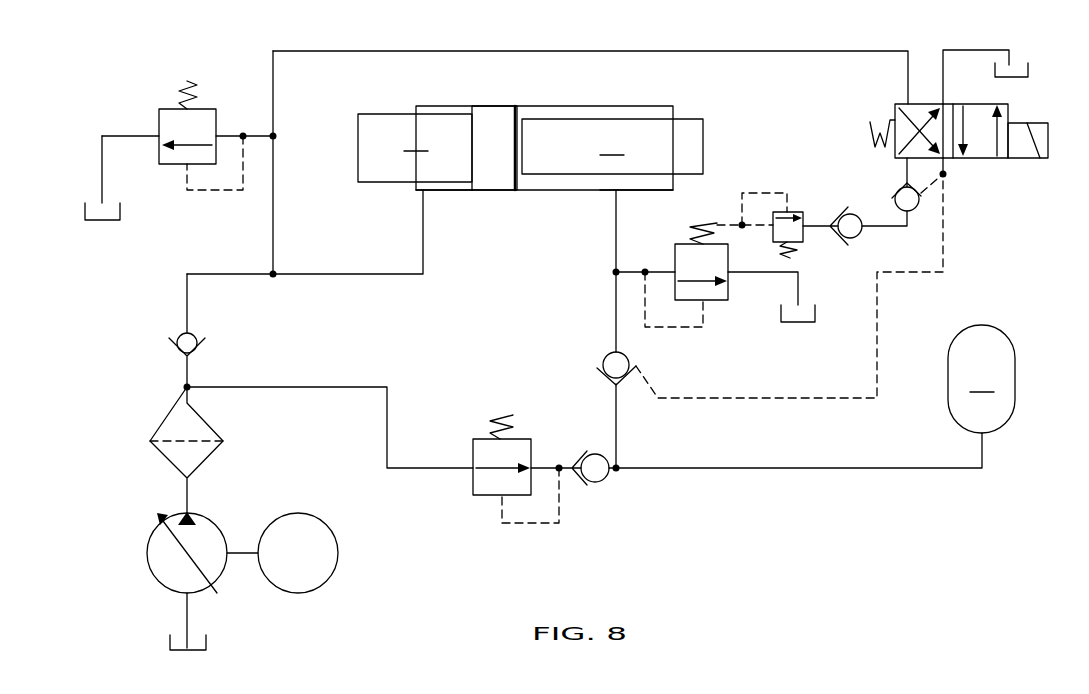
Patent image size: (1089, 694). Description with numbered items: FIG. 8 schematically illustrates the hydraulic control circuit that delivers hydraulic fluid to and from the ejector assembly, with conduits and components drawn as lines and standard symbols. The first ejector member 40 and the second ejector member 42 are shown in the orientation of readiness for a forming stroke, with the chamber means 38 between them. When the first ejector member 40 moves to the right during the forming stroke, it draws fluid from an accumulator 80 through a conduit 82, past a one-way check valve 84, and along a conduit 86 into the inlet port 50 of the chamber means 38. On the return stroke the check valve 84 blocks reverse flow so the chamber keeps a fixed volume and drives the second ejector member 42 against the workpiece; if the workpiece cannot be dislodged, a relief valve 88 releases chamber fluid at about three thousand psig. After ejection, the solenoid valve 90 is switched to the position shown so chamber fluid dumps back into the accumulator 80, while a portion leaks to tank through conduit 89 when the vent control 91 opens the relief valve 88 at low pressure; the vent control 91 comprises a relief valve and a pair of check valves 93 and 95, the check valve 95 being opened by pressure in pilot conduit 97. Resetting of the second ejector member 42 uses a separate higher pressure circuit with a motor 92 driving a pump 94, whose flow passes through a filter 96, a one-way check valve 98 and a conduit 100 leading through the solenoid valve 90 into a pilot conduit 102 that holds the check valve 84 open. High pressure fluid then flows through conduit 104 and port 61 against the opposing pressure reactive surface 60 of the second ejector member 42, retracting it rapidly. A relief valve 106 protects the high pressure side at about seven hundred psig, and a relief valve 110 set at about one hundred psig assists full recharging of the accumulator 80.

The chamber means 38 is at (606, 112).
The first ejector member 40 is at (612, 146).
The second ejector member 42 is at (415, 148).
The port 50 is at (618, 192).
The opposing pressure reactive surface 60 is at (470, 110).
The port 61 is at (425, 192).
The accumulator 80 is at (981, 379).
The conduit 82 is at (705, 466).
The one-way check valve 84 is at (652, 365).
The conduit 86 is at (616, 232).
The relief valve 88 is at (675, 250).
The conduit 89 is at (798, 292).
The solenoid valve 90 is at (992, 167).
The vent control 91 is at (739, 188).
The motor 92 is at (323, 520).
The check valve 93 is at (861, 234).
The pump 94 is at (217, 522).
The check valve 95 is at (918, 205).
The filter 96 is at (207, 421).
The pilot conduit 97 is at (947, 194).
The one-way check valve 98 is at (205, 345).
The conduit 100 is at (732, 51).
The pilot conduit 102 is at (943, 265).
The conduit 104 is at (423, 232).
The relief valve 106 is at (166, 166).
The relief valve 110 is at (478, 497).